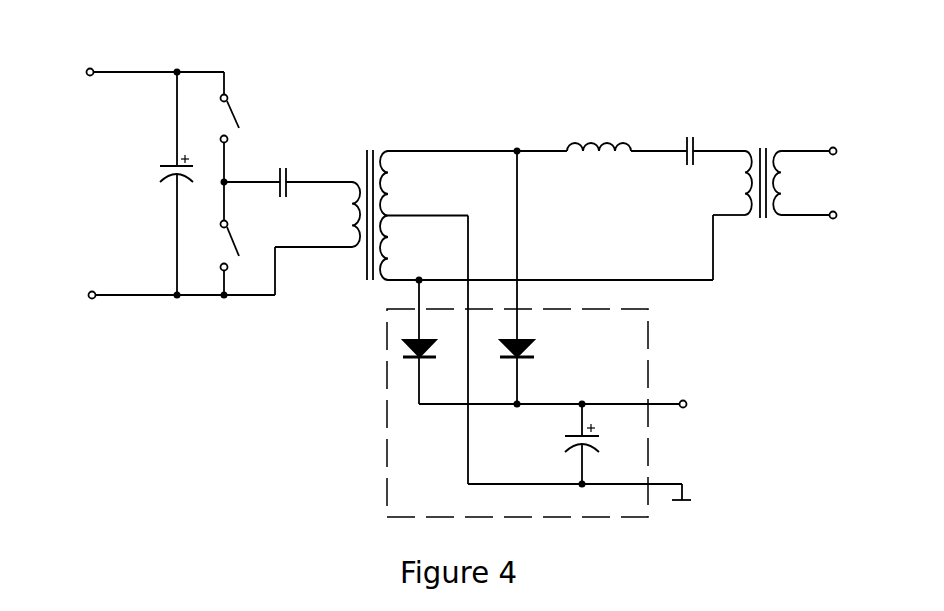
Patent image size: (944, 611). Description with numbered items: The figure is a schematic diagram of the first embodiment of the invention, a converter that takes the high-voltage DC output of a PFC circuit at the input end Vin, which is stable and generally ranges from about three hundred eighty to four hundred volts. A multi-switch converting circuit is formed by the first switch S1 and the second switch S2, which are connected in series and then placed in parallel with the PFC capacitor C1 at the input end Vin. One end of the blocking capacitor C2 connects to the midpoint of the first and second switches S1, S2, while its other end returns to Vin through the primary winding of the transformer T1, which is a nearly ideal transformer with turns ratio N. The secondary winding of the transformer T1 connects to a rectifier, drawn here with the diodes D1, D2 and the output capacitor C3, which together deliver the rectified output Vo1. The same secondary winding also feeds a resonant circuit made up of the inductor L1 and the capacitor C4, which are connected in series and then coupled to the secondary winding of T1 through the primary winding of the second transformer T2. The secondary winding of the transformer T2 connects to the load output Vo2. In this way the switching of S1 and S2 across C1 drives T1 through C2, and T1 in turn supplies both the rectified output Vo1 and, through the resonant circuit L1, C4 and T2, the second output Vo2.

The input end Vin is at (139, 72).
The PFC capacitor C1 is at (161, 183).
The first switch S1 is at (239, 127).
The second switch S2 is at (239, 238).
The blocking capacitor C2 is at (288, 174).
The transformer T1 is at (370, 207).
The resonant inductor L1 is at (627, 138).
The resonant capacitor C4 is at (713, 141).
The transformer T2 is at (747, 206).
The load output Vo2 is at (825, 181).
The rectifier diode D1 is at (429, 342).
The rectifier diode D2 is at (526, 279).
The output capacitor C3 is at (592, 443).
The rectifier output Vo1 is at (568, 404).